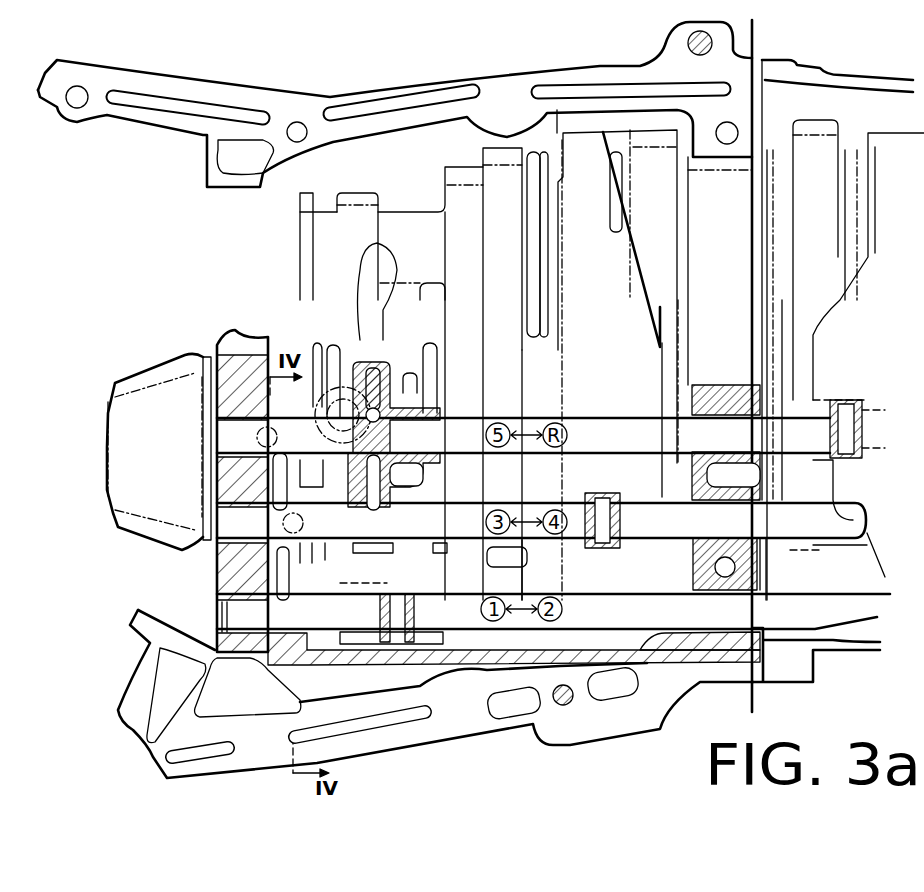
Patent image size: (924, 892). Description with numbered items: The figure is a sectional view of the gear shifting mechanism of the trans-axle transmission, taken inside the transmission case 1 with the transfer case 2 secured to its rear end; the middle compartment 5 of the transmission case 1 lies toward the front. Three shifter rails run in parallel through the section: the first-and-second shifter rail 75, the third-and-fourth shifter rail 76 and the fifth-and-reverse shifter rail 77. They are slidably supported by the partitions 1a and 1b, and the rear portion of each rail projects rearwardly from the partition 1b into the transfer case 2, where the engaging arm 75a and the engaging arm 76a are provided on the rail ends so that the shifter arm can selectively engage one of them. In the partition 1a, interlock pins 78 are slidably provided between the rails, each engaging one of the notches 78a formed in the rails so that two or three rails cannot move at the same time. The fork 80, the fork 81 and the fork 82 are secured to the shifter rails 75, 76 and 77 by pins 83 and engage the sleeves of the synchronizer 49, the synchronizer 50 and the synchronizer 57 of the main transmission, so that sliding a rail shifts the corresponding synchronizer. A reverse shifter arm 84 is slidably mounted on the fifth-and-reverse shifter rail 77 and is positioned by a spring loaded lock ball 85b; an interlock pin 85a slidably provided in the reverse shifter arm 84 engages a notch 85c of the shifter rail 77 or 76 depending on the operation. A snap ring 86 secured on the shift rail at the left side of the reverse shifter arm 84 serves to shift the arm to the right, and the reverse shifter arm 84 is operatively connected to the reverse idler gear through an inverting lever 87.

The transmission case 1 is at (623, 77).
The partition 1a is at (227, 587).
The partition 1b is at (720, 643).
The transfer case 2 is at (883, 83).
The middle compartment 5 is at (400, 143).
The synchronizer 49 is at (421, 300).
The synchronizer 50 is at (557, 133).
The synchronizer 57 is at (905, 126).
The first-and-second shifter rail 75 is at (636, 621).
The engaging arm 75a is at (873, 612).
The third-and-fourth shifter rail 76 is at (712, 531).
The engaging arm 76a is at (847, 553).
The fifth-and-reverse shifter rail 77 is at (643, 444).
The interlock pin 78 is at (277, 492).
The notch 78a is at (217, 452).
The fork 80 is at (370, 642).
The fork 81 is at (620, 371).
The fork 82 is at (878, 361).
The pin 83 is at (606, 548).
The reverse shifter arm 84 is at (397, 472).
The interlock pin 85a is at (377, 505).
The spring loaded lock ball 85b is at (388, 417).
The notch 85c is at (372, 513).
The snap ring 86 is at (360, 378).
The inverting lever 87 is at (377, 240).